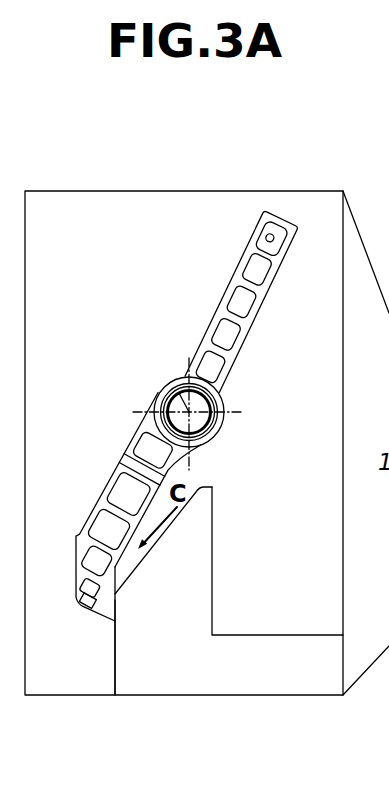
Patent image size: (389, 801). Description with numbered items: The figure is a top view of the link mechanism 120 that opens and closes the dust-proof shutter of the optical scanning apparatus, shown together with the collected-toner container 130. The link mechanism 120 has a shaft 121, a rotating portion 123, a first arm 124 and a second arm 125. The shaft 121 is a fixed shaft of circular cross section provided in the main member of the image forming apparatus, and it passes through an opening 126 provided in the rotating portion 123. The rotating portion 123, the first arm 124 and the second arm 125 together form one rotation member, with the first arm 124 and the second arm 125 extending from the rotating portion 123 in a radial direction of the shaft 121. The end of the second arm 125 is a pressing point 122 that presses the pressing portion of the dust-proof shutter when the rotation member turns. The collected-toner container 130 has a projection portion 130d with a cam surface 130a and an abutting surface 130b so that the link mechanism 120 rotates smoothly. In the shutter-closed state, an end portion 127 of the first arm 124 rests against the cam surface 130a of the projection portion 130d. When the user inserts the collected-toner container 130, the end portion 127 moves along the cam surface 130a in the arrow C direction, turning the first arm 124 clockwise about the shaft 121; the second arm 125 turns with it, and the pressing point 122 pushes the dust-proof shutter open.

The link mechanism 120 is at (97, 458).
The shaft 121 is at (170, 383).
The pressing point 122 is at (283, 205).
The rotating portion 123 is at (206, 440).
The first arm 124 is at (85, 540).
The second arm 125 is at (233, 280).
The opening 126 is at (210, 382).
The end portion 127 is at (112, 618).
The collected-toner container 130 is at (262, 673).
The cam surface 130a is at (148, 540).
The abutting surface 130b is at (108, 650).
The projection portion 130d is at (162, 592).